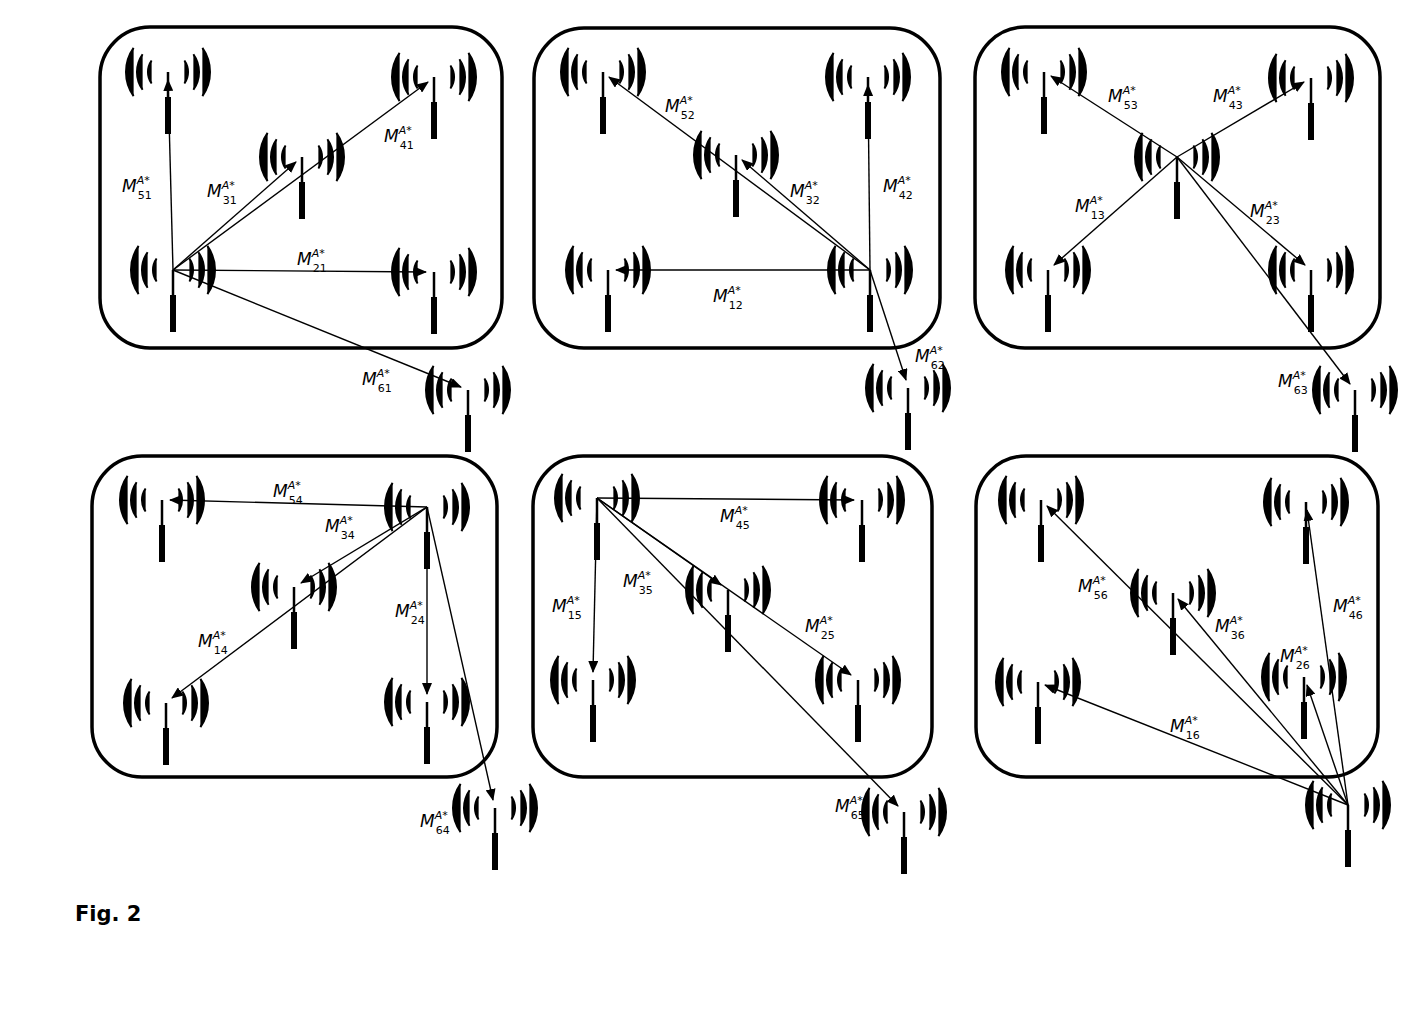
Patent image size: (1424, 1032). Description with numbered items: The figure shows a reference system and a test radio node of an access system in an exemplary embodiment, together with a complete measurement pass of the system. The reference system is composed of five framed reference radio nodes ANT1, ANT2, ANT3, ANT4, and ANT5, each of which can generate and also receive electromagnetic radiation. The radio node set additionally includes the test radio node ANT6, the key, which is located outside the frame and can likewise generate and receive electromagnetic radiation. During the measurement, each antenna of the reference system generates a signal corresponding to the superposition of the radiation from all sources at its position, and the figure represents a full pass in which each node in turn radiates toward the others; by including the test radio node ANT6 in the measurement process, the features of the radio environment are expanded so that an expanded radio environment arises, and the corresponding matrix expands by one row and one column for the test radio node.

The reference radio node ANT1 is at (607, 505).
The reference radio node ANT2 is at (865, 505).
The reference radio node ANT3 is at (735, 393).
The reference radio node ANT4 is at (869, 312).
The reference radio node ANT5 is at (603, 305).
The test radio node ANT6 is at (914, 619).